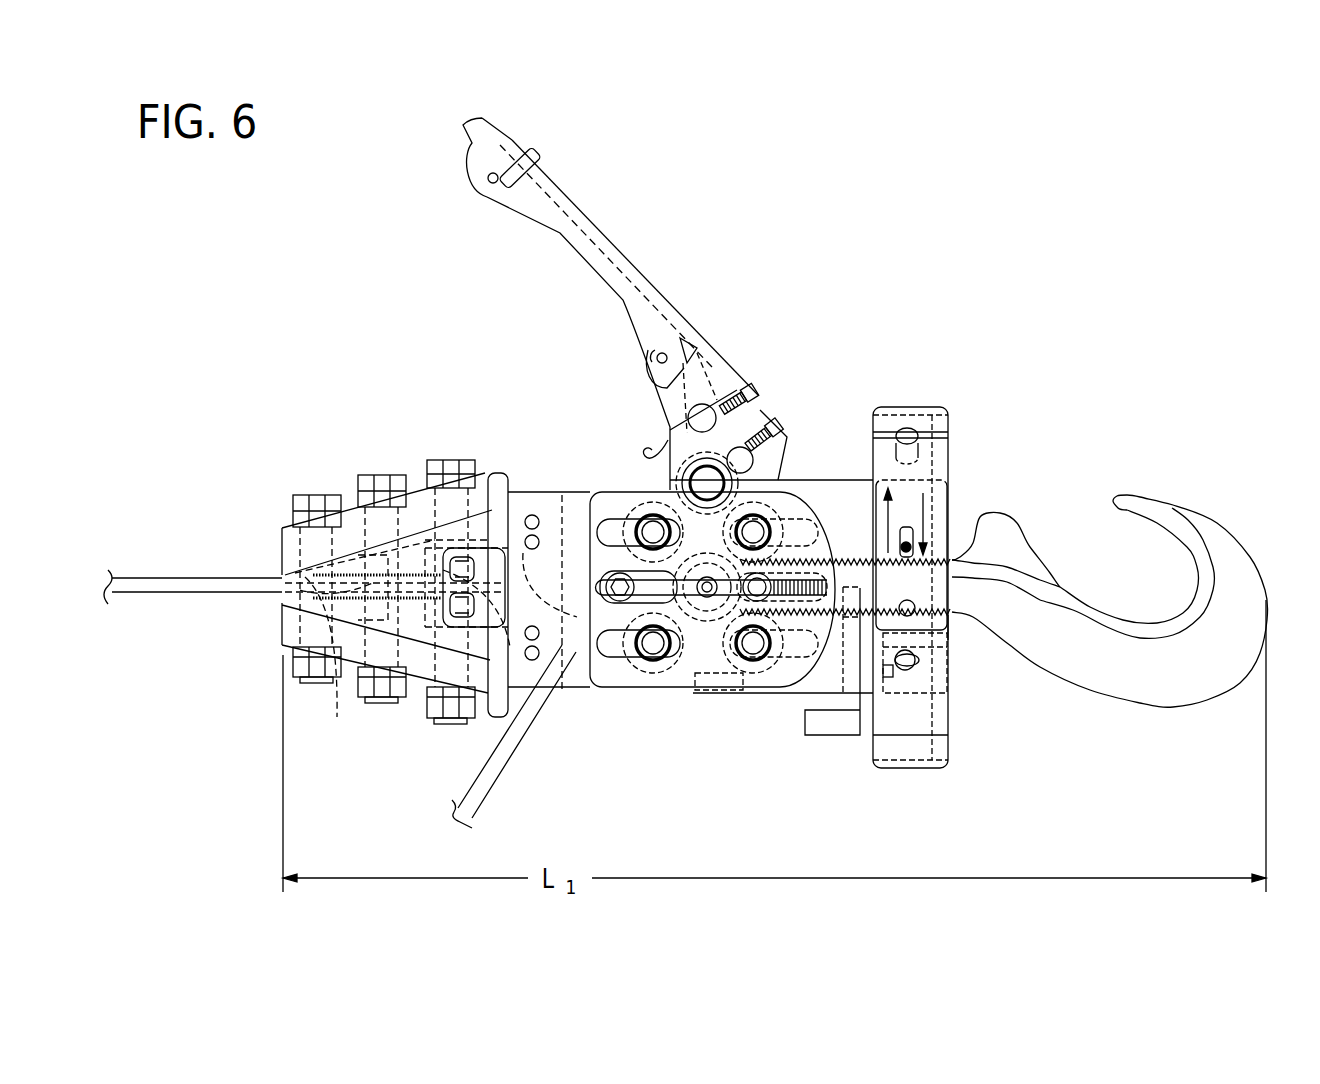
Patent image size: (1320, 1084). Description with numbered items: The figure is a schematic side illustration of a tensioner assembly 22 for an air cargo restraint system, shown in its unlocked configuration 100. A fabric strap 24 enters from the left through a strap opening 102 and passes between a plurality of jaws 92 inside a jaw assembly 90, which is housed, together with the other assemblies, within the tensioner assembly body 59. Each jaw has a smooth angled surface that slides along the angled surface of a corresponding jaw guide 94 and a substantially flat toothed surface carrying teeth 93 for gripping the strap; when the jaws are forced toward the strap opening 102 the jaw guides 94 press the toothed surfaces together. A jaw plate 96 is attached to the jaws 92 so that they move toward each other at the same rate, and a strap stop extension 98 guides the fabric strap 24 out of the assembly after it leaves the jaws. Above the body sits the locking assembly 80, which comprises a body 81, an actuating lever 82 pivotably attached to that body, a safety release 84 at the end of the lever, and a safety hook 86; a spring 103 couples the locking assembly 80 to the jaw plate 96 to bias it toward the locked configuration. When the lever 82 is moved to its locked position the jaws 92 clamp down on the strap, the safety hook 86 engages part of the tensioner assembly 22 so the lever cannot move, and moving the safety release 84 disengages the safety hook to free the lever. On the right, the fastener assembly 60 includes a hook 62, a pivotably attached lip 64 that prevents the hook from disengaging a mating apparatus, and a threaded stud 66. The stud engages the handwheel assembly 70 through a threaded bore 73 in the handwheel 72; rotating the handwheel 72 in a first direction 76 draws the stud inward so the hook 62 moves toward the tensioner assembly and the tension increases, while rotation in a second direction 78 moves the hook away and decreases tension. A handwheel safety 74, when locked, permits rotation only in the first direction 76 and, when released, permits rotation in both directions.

The unlocked configuration 100 is at (931, 148).
The tensioner assembly 22 is at (872, 343).
The fabric strap 24 is at (143, 575).
The tensioner assembly body 59 is at (581, 480).
The fastener assembly 60 is at (993, 690).
The hook 62 is at (1197, 528).
The lip 64 is at (1005, 540).
The threaded stud 66 is at (830, 493).
The handwheel assembly 70 is at (852, 776).
The handwheel 72 is at (925, 430).
The threaded bore 73 is at (954, 636).
The handwheel safety 74 is at (815, 735).
The first direction 76 is at (917, 505).
The second direction 78 is at (905, 520).
The locking assembly 80 is at (800, 450).
The body 81 is at (672, 692).
The actuating lever 82 is at (665, 310).
The safety release 84 is at (463, 147).
The safety hook 86 is at (648, 447).
The jaw assembly 90 is at (509, 480).
The jaws 92 is at (337, 700).
The teeth 93 is at (352, 592).
The jaw guide 94 is at (290, 520).
The jaw plate 96 is at (583, 592).
The strap stop extension 98 is at (547, 480).
The strap opening 102 is at (278, 575).
The spring 103 is at (622, 692).